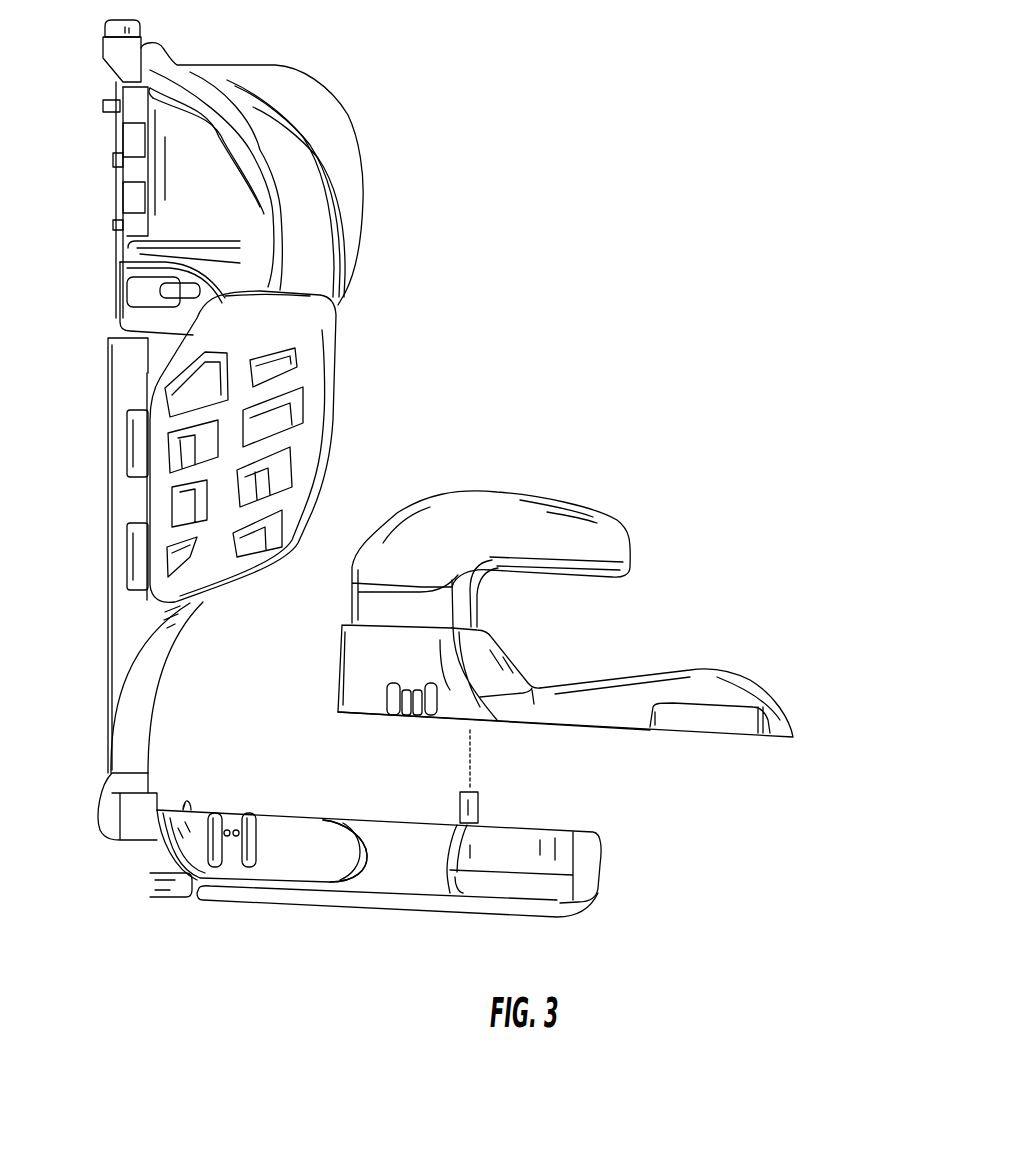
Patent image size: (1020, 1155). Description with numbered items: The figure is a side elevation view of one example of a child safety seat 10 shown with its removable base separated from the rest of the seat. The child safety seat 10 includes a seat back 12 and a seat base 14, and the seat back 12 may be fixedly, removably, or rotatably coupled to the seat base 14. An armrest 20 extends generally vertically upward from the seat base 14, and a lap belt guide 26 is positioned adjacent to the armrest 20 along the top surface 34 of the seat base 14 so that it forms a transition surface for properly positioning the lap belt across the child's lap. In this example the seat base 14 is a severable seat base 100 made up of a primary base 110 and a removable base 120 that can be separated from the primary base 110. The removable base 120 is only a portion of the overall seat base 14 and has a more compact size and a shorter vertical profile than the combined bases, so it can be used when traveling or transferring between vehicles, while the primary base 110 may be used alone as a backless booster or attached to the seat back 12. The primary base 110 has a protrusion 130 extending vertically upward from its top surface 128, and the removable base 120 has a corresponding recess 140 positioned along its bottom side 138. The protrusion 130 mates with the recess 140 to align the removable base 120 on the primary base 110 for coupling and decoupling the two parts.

The child safety seat 10 is at (441, 496).
The seat back 12 is at (72, 309).
The seat base 14 is at (498, 715).
The armrest 20 is at (487, 507).
The lap belt guide 26 is at (493, 653).
The top surface 34 is at (642, 670).
The severable seat base 100 is at (480, 870).
The primary base 110 is at (379, 878).
The removable base 120 is at (565, 620).
The top surface 128 is at (343, 818).
The protrusion 130 is at (480, 800).
The bottom side 138 is at (572, 727).
The recess 140 is at (626, 736).